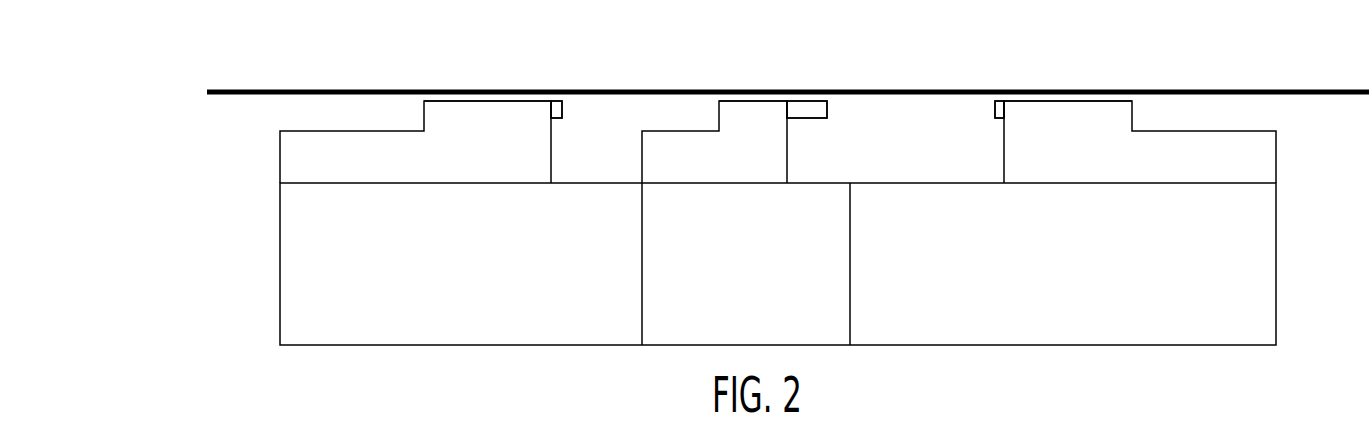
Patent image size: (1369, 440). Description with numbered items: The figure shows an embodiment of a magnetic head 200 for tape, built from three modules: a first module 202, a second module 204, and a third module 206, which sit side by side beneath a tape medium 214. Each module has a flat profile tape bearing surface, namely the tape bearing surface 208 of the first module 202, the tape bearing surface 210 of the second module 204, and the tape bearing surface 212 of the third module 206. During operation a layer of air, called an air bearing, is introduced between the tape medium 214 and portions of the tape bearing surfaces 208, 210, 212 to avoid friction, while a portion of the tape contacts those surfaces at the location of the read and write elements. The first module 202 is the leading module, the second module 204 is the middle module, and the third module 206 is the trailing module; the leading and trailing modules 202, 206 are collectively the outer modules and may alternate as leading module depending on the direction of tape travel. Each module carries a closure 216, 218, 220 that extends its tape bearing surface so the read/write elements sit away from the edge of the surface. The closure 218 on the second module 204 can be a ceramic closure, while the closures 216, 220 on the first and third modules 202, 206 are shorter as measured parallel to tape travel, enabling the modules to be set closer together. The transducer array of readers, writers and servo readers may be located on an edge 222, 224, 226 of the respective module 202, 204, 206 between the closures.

The magnetic head 200 is at (276, 63).
The first module 202 is at (290, 162).
The second module 204 is at (655, 162).
The third module 206 is at (1013, 162).
The tape bearing surface 208 is at (503, 100).
The tape bearing surface 210 is at (747, 100).
The tape bearing surface 212 is at (1080, 100).
The tape medium 214 is at (898, 89).
The closure 216 is at (563, 109).
The closure 218 is at (828, 108).
The closure 220 is at (994, 110).
The edge 222 is at (553, 100).
The edge 224 is at (788, 100).
The edge 226 is at (1006, 100).